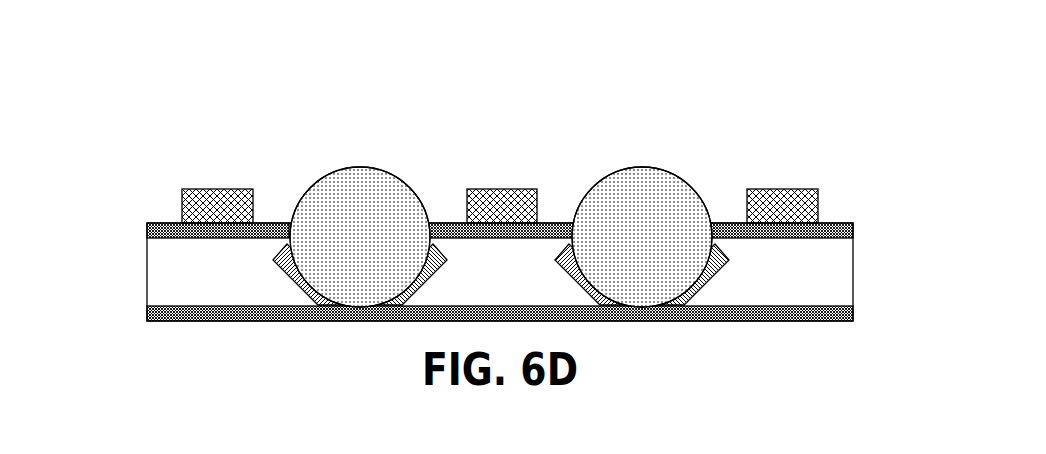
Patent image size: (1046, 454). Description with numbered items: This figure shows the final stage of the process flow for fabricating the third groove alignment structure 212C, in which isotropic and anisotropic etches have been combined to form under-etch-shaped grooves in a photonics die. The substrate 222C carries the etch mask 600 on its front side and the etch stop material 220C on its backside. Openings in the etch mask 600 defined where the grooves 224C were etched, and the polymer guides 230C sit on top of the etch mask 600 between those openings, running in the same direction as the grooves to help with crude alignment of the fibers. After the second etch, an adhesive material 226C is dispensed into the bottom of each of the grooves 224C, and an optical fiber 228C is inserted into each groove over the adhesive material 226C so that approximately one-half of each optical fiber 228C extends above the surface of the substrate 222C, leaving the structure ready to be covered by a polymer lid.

The third groove alignment structure 212C is at (527, 86).
The substrate 222C is at (147, 278).
The adhesive material 226C is at (718, 270).
The etch mask 600 is at (855, 226).
The etch stop material 220C is at (855, 310).
The polymer guides 230C is at (782, 190).
The optical fiber 228C is at (392, 170).
The grooves 224C is at (284, 212).